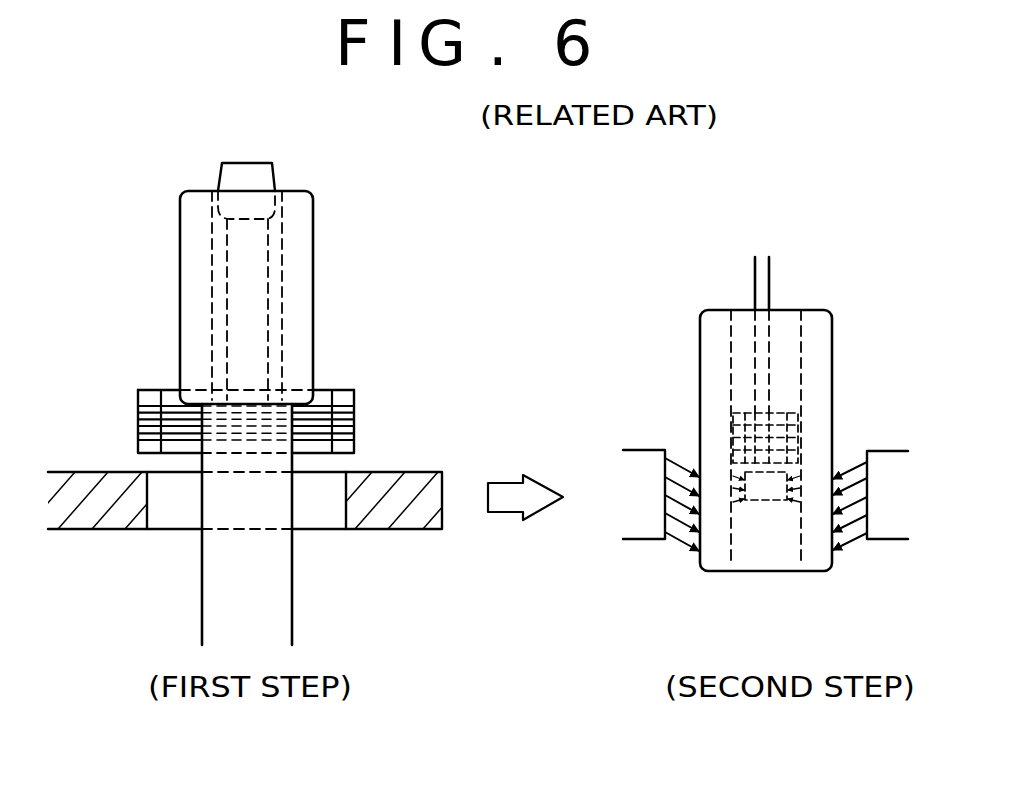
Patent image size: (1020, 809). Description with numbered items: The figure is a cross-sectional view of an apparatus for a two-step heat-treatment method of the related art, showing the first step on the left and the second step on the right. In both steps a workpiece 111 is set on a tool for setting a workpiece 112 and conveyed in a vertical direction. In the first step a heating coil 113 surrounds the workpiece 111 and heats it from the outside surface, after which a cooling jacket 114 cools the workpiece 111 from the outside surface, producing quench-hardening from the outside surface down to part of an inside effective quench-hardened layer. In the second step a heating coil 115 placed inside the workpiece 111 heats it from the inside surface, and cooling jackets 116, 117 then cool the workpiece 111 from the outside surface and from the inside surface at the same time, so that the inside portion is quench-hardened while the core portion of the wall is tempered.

The workpiece 111 is at (313, 295).
The tool for setting a workpiece 112 is at (292, 597).
The heating coil 113 is at (354, 421).
The cooling jacket 114 is at (403, 529).
The heating coil 115 is at (733, 413).
The cooling jacket 116 is at (890, 539).
The cooling jacket 117 is at (732, 470).